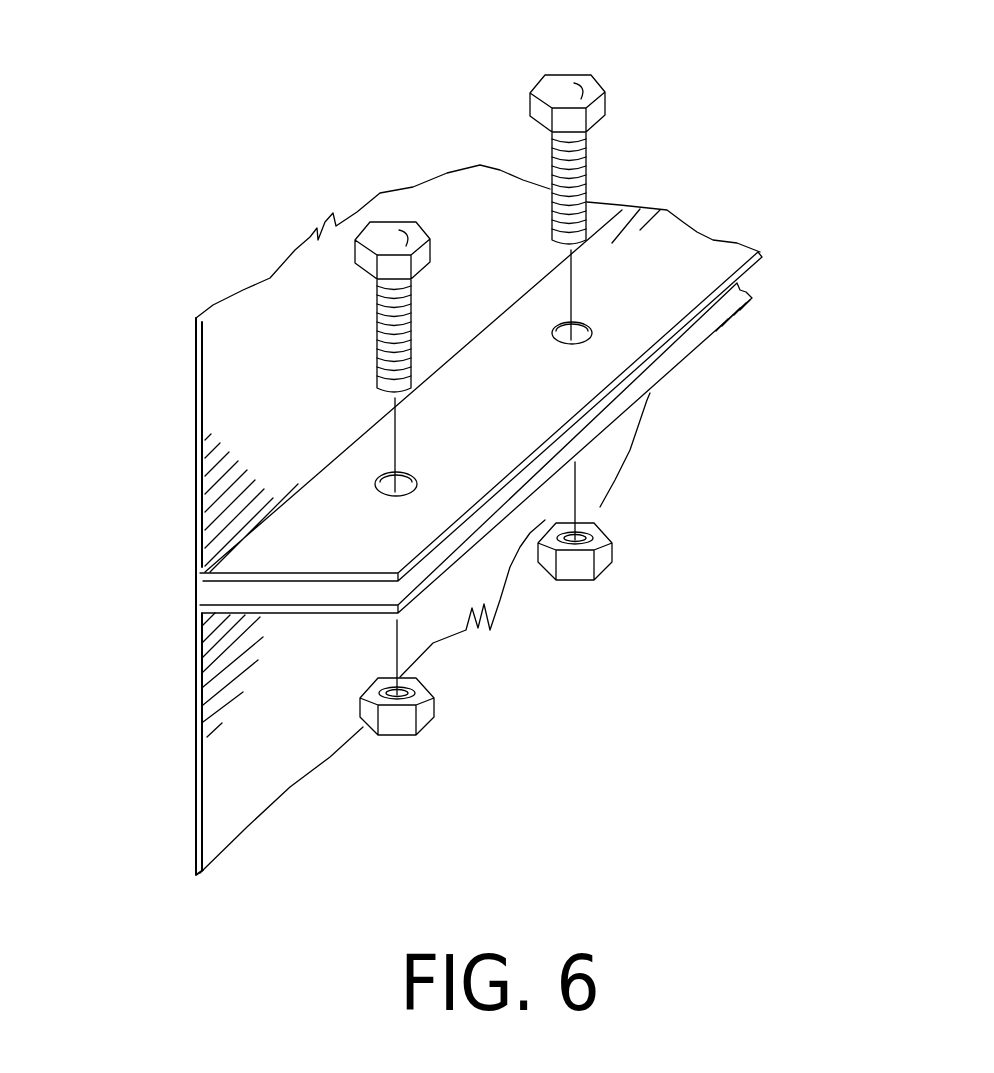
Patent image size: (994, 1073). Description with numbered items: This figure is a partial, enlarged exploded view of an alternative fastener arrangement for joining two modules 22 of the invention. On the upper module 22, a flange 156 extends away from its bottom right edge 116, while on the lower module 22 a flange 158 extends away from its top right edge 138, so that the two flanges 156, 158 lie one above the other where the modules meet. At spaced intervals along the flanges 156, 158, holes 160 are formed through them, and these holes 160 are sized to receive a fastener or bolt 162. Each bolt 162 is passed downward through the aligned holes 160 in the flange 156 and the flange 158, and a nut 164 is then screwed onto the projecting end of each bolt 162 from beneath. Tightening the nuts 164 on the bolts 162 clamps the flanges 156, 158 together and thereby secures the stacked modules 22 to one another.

The module 22 is at (223, 363).
The bottom right edge 116 is at (314, 455).
The top right edge 138 is at (180, 596).
The flange 156 is at (668, 253).
The flange 158 is at (703, 327).
The holes 160 is at (368, 497).
The bolt 162 is at (385, 240).
The nuts 164 is at (568, 568).